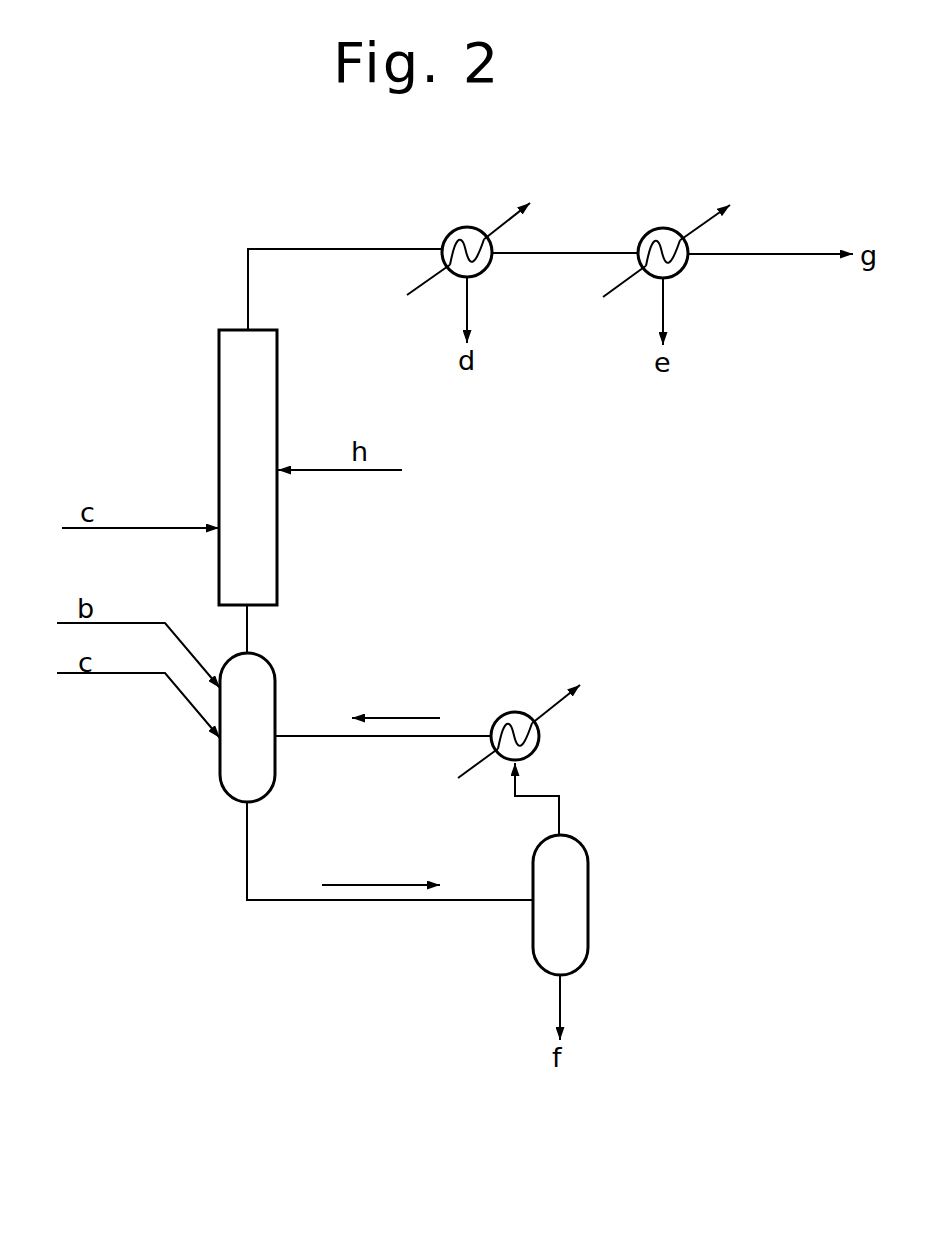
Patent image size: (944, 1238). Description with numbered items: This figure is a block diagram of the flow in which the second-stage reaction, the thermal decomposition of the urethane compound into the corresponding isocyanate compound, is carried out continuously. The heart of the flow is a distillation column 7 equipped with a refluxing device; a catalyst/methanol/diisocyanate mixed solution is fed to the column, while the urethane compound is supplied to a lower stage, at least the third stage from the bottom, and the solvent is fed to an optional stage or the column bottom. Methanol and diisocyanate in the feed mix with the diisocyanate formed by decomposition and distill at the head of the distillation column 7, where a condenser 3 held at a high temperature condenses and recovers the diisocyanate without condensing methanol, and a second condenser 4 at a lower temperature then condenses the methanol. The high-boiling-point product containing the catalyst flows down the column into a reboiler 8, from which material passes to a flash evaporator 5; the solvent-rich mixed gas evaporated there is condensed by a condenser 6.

The condenser 3 is at (470, 228).
The condenser 4 is at (666, 228).
The flash evaporator 5 is at (589, 852).
The condenser 6 is at (518, 712).
The distillation column 7 is at (279, 361).
The reboiler 8 is at (277, 677).